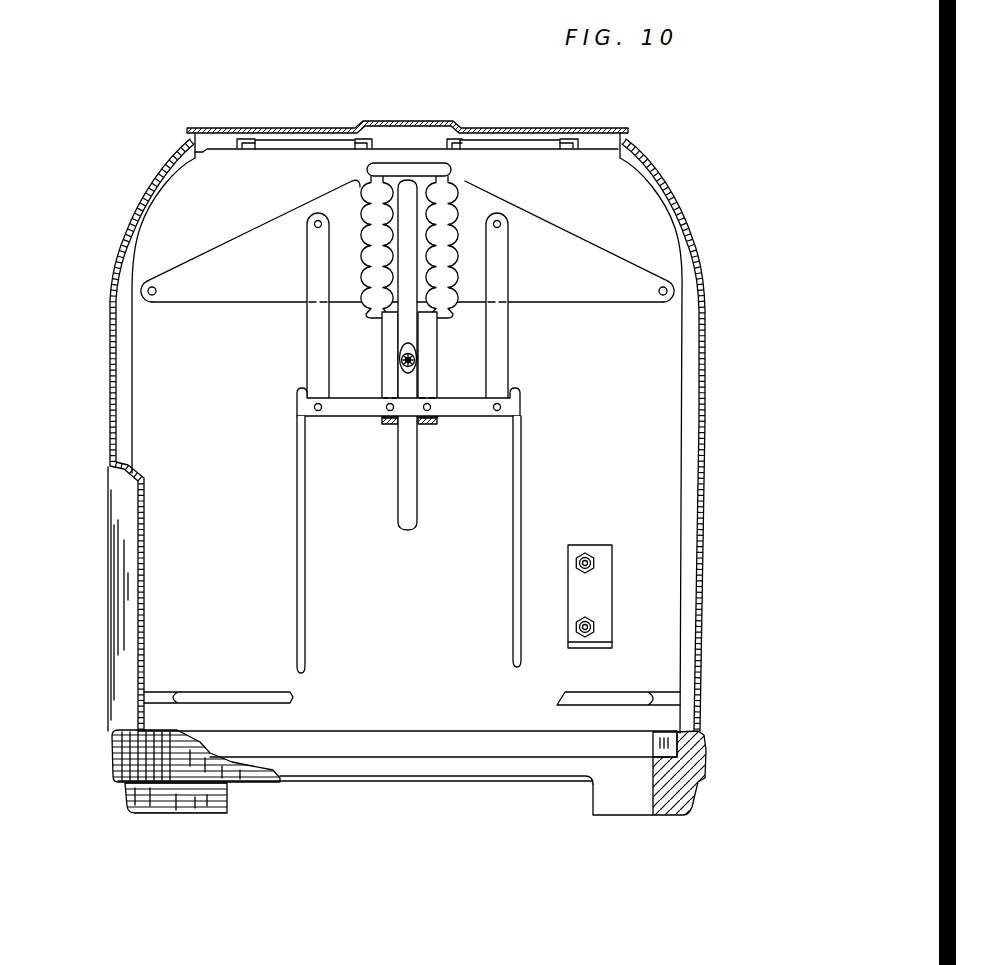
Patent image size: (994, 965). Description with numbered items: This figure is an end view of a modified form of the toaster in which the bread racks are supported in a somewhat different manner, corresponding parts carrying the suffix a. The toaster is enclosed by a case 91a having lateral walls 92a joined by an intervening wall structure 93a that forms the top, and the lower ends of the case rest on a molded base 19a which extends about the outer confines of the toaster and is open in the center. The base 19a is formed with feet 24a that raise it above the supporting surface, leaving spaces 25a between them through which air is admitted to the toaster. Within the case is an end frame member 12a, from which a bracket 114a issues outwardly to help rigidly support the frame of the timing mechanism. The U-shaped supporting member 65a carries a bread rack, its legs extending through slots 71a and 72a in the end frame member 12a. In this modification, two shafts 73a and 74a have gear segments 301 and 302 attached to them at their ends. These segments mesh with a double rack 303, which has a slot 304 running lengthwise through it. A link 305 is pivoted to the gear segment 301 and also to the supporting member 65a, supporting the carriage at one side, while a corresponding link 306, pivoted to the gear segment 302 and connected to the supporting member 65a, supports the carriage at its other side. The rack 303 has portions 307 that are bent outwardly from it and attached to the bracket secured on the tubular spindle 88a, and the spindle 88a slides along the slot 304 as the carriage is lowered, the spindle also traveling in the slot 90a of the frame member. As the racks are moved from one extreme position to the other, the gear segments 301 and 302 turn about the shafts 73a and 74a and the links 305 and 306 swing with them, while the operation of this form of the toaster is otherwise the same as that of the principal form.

The end frame member 12a is at (660, 523).
The base 19a is at (688, 794).
The feet 24a is at (152, 813).
The spaces 25a is at (317, 800).
The supporting member 65a is at (350, 412).
The slot 71a is at (297, 526).
The slot 72a is at (520, 498).
The shaft 73a is at (156, 300).
The shaft 74a is at (661, 300).
The tubular spindle 88a is at (417, 353).
The slot 90a is at (412, 490).
The case 91a is at (120, 578).
The lateral wall 92a is at (108, 372).
The intervening wall structure 93a is at (297, 127).
The bracket 114a is at (605, 631).
The gear segment 301 is at (228, 247).
The gear segment 302 is at (590, 247).
The double rack 303 is at (410, 170).
The slot 304 is at (403, 318).
The link 305 is at (313, 352).
The link 306 is at (502, 365).
The bent-out portions 307 is at (390, 430).